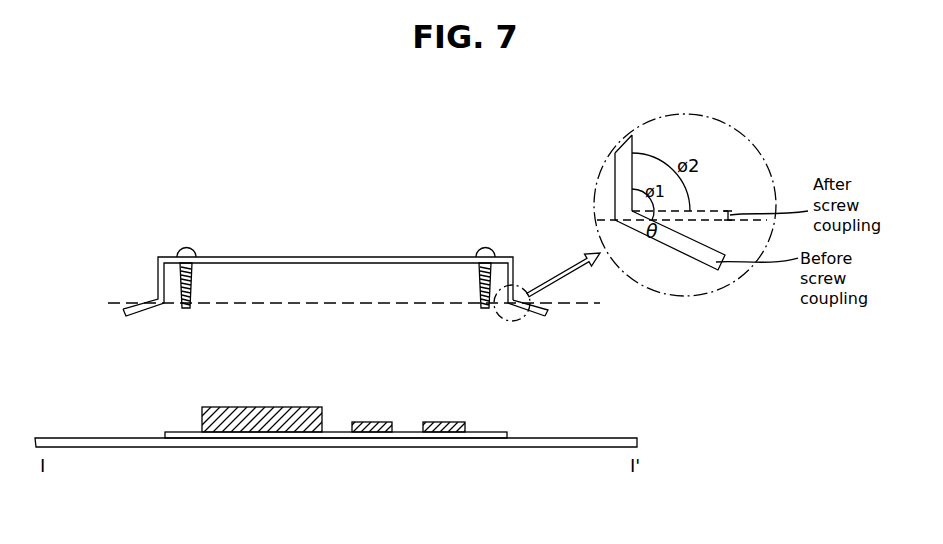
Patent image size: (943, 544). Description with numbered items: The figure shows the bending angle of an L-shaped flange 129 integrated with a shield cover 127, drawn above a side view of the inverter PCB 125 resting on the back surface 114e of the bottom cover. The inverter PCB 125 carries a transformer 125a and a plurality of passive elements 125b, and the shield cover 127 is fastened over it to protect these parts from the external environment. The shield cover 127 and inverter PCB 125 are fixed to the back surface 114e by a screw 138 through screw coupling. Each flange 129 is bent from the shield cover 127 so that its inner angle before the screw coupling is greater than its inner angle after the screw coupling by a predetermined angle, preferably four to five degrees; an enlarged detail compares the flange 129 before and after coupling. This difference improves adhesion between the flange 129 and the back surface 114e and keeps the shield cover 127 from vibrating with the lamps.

The shield cover 127 is at (334, 257).
The screw 138 is at (486, 248).
The L-shaped flange 129 is at (525, 268).
The back surface 114e is at (565, 437).
The inverter PCB 125 is at (337, 438).
The transformer 125a is at (262, 425).
The passive elements 125b is at (428, 430).